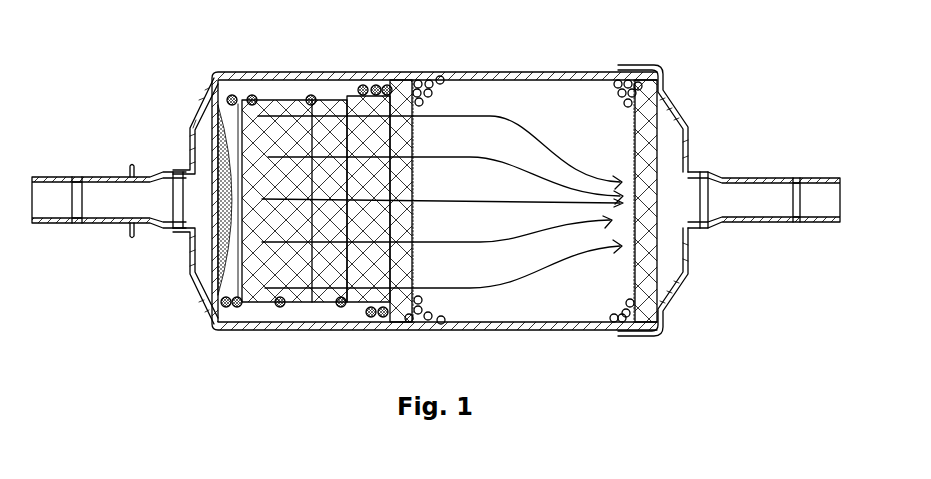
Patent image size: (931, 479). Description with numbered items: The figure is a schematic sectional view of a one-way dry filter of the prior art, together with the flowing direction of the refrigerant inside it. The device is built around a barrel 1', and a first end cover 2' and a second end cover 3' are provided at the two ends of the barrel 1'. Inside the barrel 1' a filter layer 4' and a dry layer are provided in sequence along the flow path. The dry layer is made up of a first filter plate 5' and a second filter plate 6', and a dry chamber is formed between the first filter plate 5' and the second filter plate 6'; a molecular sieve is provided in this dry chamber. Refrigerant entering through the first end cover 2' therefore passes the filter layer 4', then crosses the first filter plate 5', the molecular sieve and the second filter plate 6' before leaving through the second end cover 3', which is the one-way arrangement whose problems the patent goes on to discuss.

The barrel 1' is at (434, 231).
The first end cover 2' is at (125, 198).
The second end cover 3' is at (729, 200).
The filter layer 4' is at (316, 157).
The first filter plate 5' is at (398, 167).
The second filter plate 6' is at (649, 167).